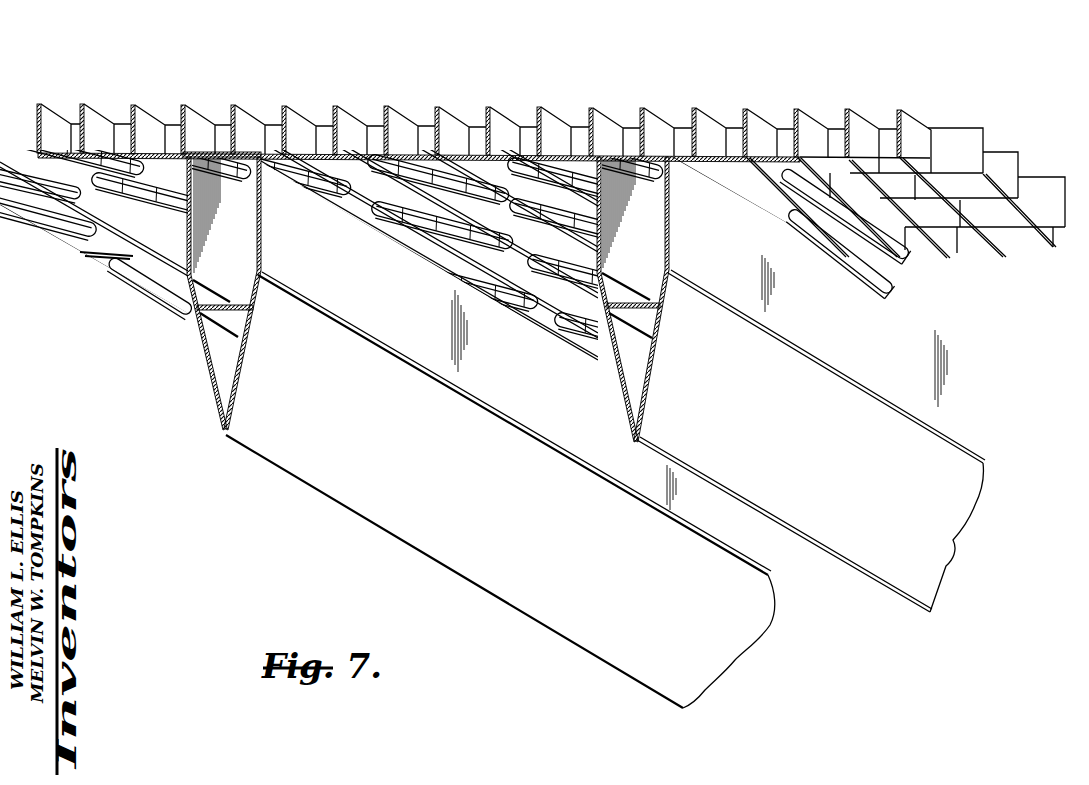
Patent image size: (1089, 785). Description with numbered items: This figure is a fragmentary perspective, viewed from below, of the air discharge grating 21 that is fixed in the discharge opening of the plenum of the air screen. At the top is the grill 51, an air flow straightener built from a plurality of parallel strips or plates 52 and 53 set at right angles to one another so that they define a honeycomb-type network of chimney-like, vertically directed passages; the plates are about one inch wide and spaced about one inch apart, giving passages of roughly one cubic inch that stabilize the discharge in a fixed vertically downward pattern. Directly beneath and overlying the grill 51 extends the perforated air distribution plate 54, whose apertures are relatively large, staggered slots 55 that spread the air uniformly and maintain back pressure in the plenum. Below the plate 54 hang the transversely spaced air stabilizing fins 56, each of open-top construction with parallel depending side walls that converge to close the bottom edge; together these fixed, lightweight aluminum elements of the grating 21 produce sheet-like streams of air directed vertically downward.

The air discharge grating 21 is at (905, 95).
The grill 51 is at (489, 111).
The parallel strips or plates 52 is at (243, 121).
The parallel strips or plates 53 is at (273, 132).
The perforated air distribution plate 54 is at (653, 155).
The slots 55 is at (127, 274).
The air stabilizing fins 56 is at (212, 382).